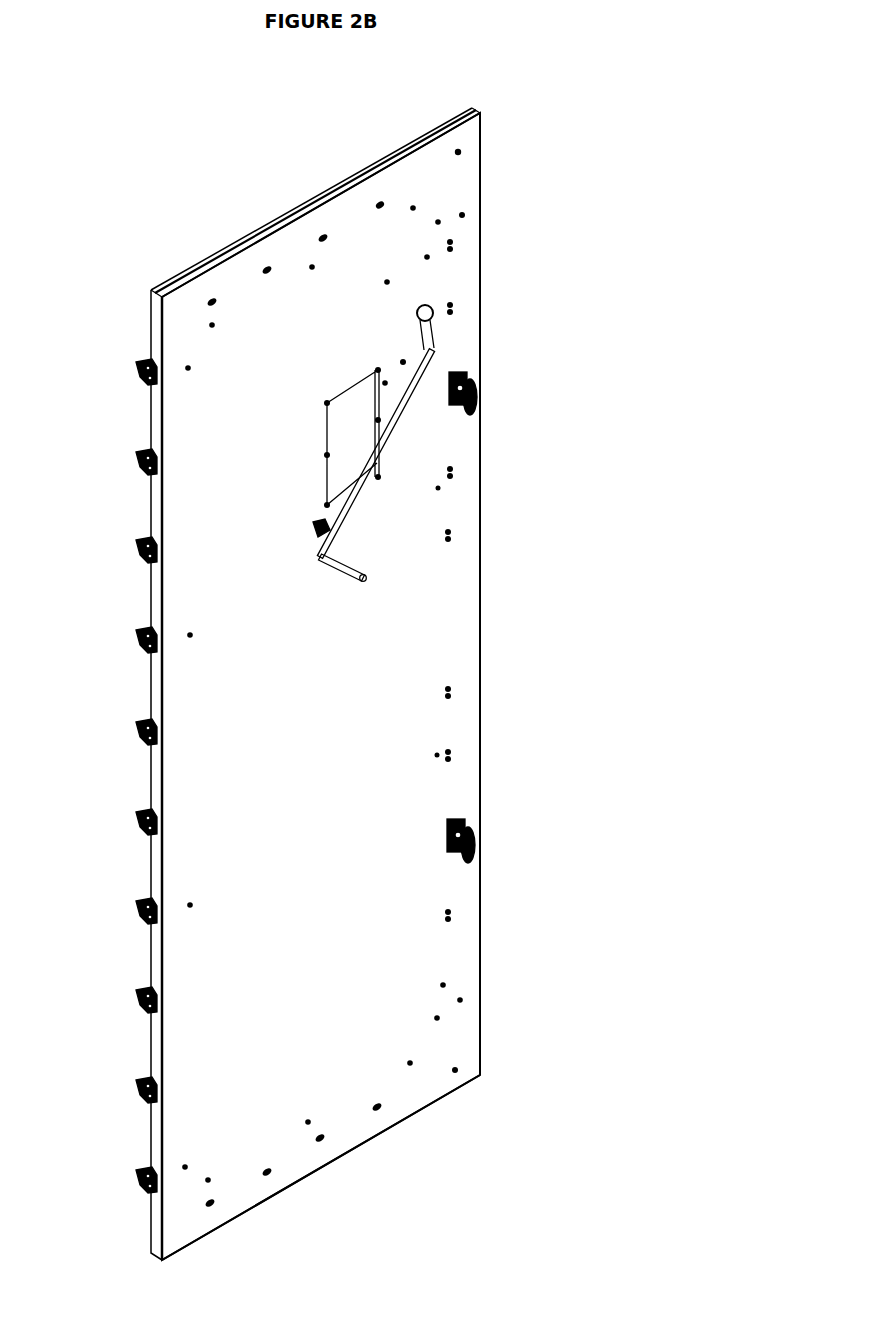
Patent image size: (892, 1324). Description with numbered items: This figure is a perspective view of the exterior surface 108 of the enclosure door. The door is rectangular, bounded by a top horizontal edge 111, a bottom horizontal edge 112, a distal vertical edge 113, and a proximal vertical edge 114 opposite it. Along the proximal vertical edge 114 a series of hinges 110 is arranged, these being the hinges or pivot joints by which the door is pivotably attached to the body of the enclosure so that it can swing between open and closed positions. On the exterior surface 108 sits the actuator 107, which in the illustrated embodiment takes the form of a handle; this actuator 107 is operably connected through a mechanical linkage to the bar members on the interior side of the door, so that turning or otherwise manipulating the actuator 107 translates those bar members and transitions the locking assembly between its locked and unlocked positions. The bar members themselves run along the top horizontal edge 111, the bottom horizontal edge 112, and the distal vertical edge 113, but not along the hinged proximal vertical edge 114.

The actuator 107 is at (483, 385).
The exterior surface 108 is at (315, 714).
The hinges 110 is at (140, 366).
The top horizontal edge 111 is at (283, 222).
The bottom horizontal edge 112 is at (297, 1182).
The distal vertical edge 113 is at (480, 586).
The proximal vertical edge 114 is at (150, 677).